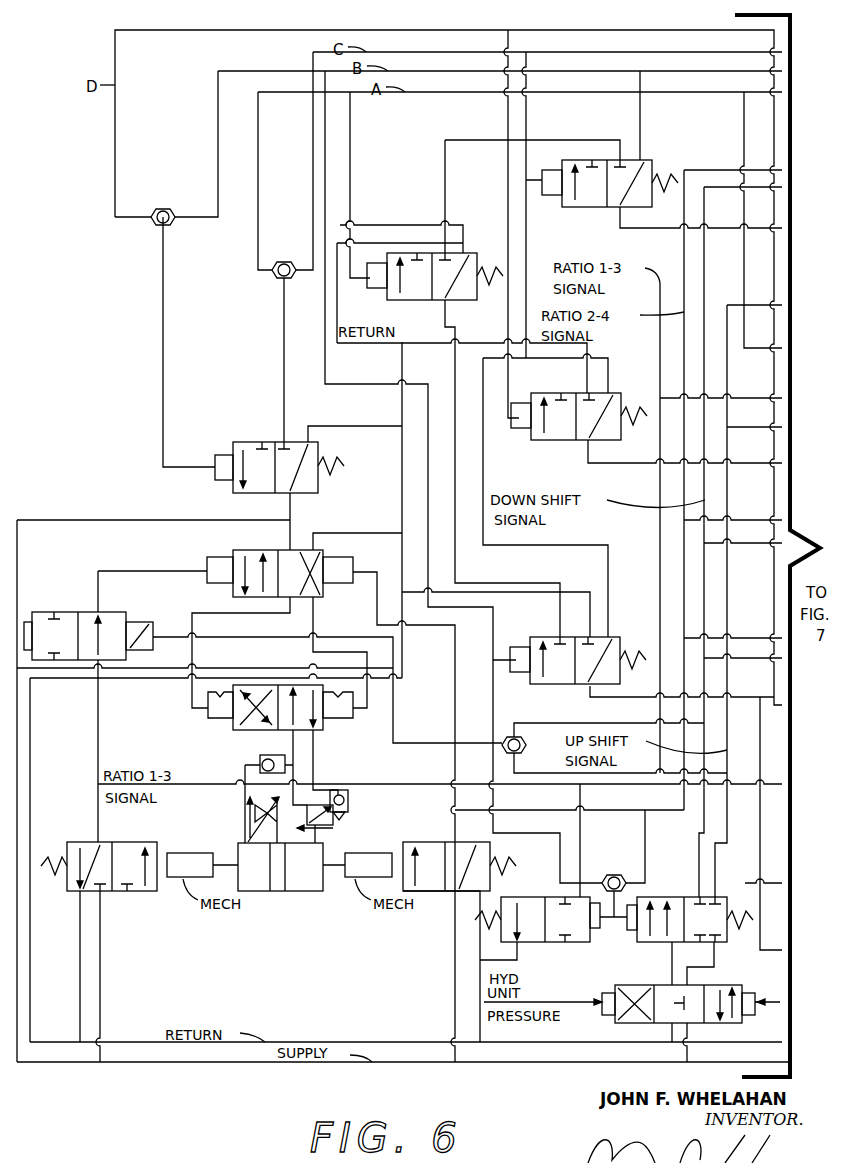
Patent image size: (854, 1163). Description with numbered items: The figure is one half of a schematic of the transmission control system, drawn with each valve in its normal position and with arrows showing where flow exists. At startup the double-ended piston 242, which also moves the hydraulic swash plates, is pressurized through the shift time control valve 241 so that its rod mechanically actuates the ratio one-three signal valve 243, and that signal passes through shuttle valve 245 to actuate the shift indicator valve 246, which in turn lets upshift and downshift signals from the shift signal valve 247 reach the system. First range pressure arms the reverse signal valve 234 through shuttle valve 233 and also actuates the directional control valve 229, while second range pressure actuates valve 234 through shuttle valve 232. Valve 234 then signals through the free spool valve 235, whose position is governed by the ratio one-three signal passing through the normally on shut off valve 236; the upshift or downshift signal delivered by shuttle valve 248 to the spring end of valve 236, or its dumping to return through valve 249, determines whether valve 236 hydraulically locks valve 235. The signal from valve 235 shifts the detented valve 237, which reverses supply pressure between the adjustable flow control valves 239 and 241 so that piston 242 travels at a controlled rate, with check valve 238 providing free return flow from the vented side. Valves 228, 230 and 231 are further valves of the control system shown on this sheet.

The ratio 1-3 signal valve 228 is at (596, 210).
The directional control valve 229 is at (400, 302).
The down shift signal valve 230 is at (542, 442).
The up shift signal valve 231 is at (530, 690).
The shuttle valve 232 is at (160, 226).
The shuttle valve 233 is at (283, 280).
The reverse signal valve 234 is at (248, 442).
The free spool directional control valve 235 is at (258, 550).
The shut off valve 236 is at (72, 612).
The detented directional control valve 237 is at (225, 720).
The check valve 238 is at (260, 760).
The flow control valve 239 is at (245, 822).
The shift time control valve 241 is at (340, 812).
The double-ended piston 242 is at (297, 893).
The ratio 1-3 signal valve 243 is at (122, 893).
The shuttle valve 245 is at (612, 877).
The shift indicator valve 246 is at (700, 897).
The shift signal valve 247 is at (640, 1025).
The shuttle valve 248 is at (507, 738).
The shut off valve 249 is at (568, 944).